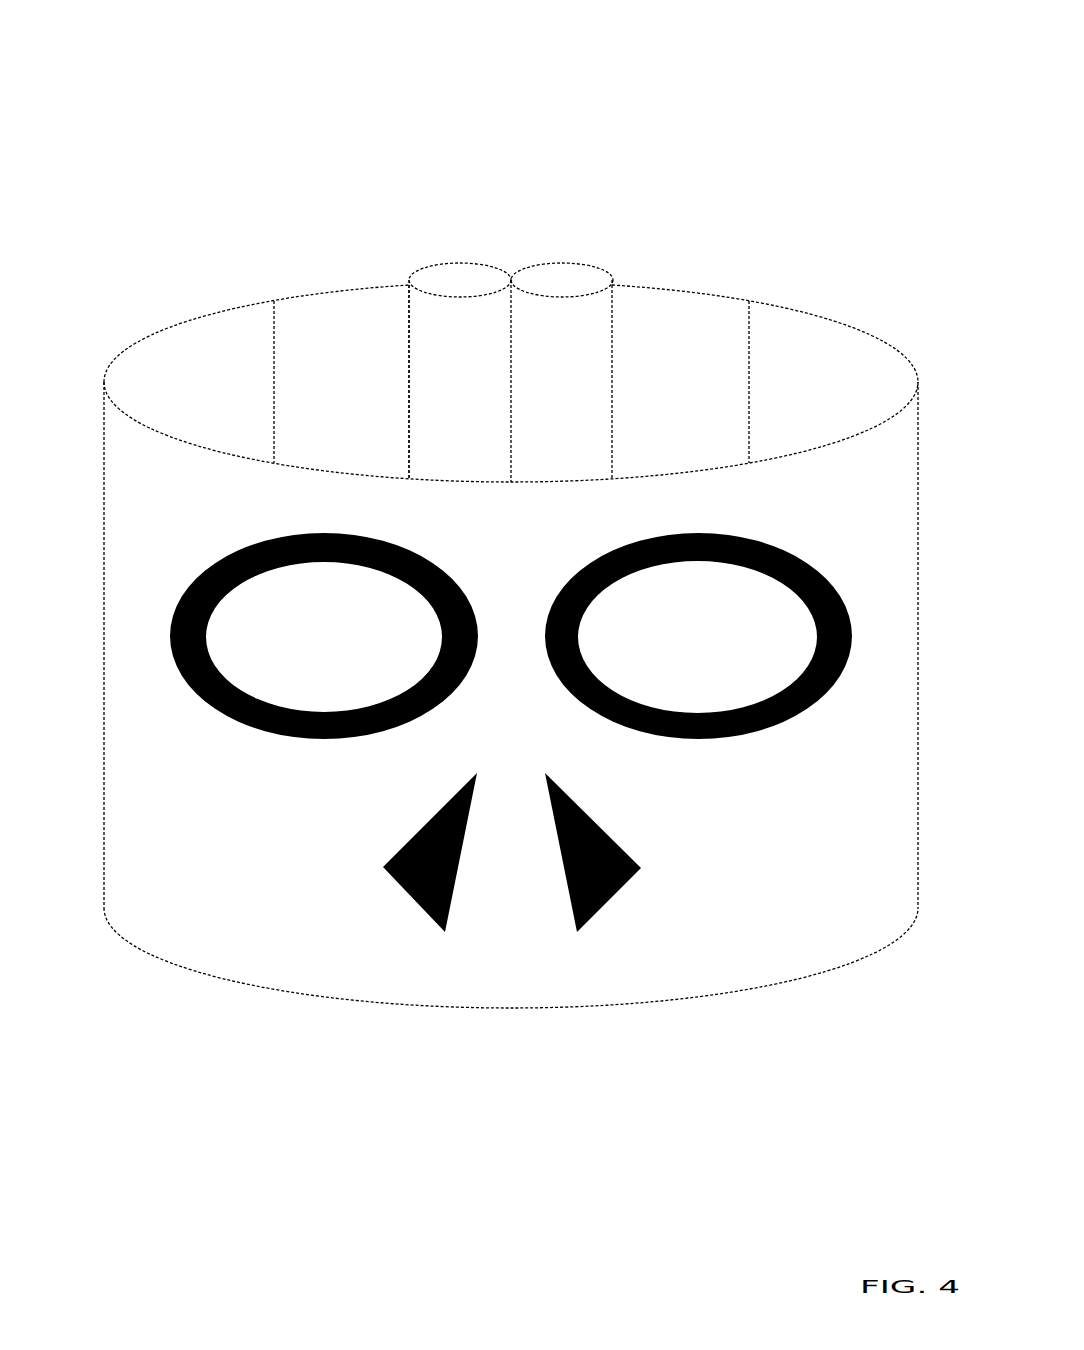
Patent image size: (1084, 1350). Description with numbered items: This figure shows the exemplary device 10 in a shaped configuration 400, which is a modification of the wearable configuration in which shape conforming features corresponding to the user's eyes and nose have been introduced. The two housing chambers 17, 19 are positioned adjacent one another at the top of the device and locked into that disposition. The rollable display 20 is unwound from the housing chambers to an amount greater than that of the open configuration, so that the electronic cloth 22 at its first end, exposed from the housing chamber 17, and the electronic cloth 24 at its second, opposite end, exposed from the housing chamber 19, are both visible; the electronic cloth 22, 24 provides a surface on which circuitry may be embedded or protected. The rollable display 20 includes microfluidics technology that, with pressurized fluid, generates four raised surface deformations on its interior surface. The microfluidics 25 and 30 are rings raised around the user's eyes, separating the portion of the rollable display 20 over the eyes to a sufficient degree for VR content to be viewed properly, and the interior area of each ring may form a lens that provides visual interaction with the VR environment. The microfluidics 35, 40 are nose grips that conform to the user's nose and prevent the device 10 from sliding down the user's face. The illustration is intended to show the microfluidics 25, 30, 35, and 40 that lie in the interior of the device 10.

The shaped configuration 400 is at (160, 93).
The device 10 is at (193, 267).
The rollable display 20 is at (161, 554).
The electronic cloth 22 is at (330, 421).
The electronic cloth 24 is at (669, 421).
The housing chamber 17 is at (449, 421).
The housing chamber 19 is at (551, 471).
The microfluidics surface deformation 25 is at (297, 735).
The microfluidics surface deformation 30 is at (762, 728).
The microfluidics surface deformation 35 is at (408, 897).
The microfluidics surface deformation 40 is at (620, 893).